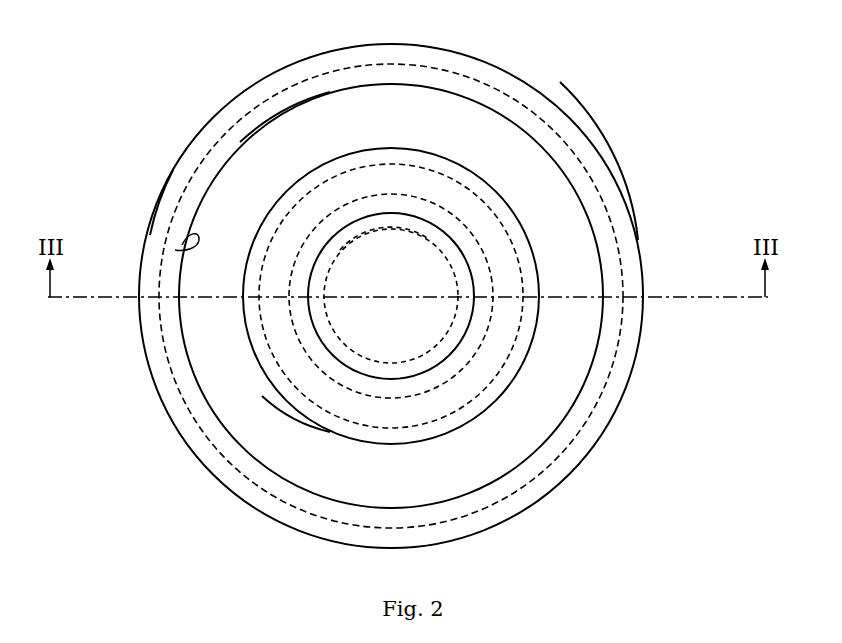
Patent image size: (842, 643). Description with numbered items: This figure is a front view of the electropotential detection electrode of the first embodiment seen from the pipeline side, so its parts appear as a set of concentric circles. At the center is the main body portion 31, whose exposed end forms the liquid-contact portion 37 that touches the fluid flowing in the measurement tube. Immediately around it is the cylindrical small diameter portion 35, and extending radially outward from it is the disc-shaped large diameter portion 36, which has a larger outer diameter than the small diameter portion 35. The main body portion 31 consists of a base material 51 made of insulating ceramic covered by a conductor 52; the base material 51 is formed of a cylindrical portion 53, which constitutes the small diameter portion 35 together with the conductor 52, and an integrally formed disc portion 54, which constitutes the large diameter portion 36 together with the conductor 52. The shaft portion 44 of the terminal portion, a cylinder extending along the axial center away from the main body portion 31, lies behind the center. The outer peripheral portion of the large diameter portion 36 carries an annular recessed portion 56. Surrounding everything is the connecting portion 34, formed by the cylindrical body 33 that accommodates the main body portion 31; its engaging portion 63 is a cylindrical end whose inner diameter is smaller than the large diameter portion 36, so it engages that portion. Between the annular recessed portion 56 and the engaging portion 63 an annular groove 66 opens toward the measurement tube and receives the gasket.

The main body portion 31 is at (292, 99).
The cylindrical body 33 is at (157, 208).
The connecting portion 34 is at (160, 165).
The small diameter portion 35 is at (422, 220).
The large diameter portion 36 is at (545, 140).
The liquid-contact portion 37 is at (430, 334).
The shaft portion 44 is at (296, 323).
The base material 51 is at (232, 117).
The conductor 52 is at (238, 163).
The cylindrical portion 53 is at (440, 240).
The disc portion 54 is at (600, 178).
The annular recessed portion 56 is at (290, 436).
The engaging portion 63 is at (182, 245).
The annular groove 66 is at (230, 414).